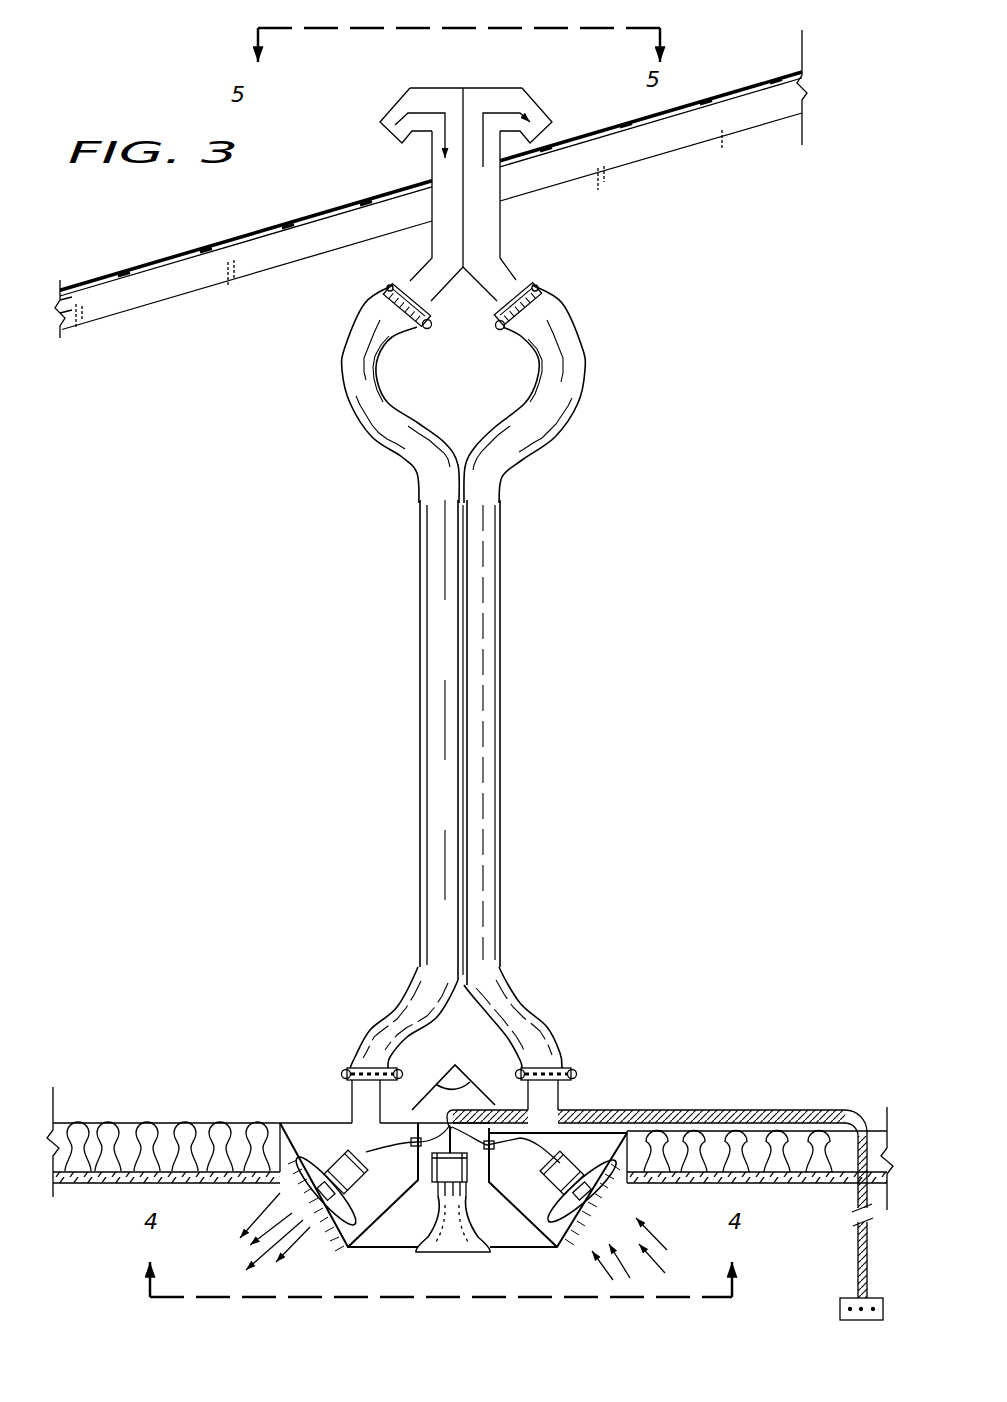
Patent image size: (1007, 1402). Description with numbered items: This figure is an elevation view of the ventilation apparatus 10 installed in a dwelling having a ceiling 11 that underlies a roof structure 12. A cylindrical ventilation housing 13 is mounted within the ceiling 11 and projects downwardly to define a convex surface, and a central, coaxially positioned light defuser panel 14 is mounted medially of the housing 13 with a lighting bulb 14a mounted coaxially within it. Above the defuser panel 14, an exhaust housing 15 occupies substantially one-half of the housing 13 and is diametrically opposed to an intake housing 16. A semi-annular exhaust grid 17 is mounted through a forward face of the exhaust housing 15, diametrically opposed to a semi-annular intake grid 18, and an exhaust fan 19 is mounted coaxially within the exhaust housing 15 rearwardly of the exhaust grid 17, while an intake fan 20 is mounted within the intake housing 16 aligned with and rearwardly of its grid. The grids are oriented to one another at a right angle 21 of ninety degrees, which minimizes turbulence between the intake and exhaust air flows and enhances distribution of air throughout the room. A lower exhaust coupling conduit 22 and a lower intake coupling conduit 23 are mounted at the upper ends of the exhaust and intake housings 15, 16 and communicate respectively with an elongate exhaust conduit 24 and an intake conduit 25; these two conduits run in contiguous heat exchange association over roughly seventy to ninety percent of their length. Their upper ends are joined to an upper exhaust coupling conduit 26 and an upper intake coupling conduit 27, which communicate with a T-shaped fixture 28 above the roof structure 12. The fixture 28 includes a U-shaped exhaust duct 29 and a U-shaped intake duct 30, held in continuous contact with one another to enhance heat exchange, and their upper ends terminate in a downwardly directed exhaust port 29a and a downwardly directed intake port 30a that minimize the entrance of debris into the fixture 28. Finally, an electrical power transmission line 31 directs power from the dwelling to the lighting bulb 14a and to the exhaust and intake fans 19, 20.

The ventilation apparatus 10 is at (658, 488).
The ceiling 11 is at (780, 1185).
The roof structure 12 is at (735, 85).
The ventilation housing 13 is at (385, 1250).
The light defuser panel 14 is at (483, 1232).
The lighting bulb 14a is at (464, 1224).
The exhaust housing 15 is at (585, 1138).
The intake housing 16 is at (322, 1140).
The exhaust grid 17 is at (617, 1197).
The intake grid 18 is at (313, 1213).
The exhaust fan 19 is at (556, 1193).
The intake fan 20 is at (353, 1205).
The right angle 21 is at (437, 1087).
The lower exhaust coupling conduit 22 is at (545, 1107).
The lower intake coupling conduit 23 is at (352, 1110).
The exhaust conduit 24 is at (478, 793).
The intake conduit 25 is at (430, 826).
The upper exhaust coupling conduit 26 is at (500, 277).
The upper intake coupling conduit 27 is at (428, 272).
The T-shaped fixture 28 is at (458, 82).
The U-shaped exhaust duct 29 is at (486, 183).
The exhaust port 29a is at (548, 130).
The U-shaped intake duct 30 is at (448, 206).
The intake port 30a is at (402, 142).
The electrical power transmission line 31 is at (727, 1112).